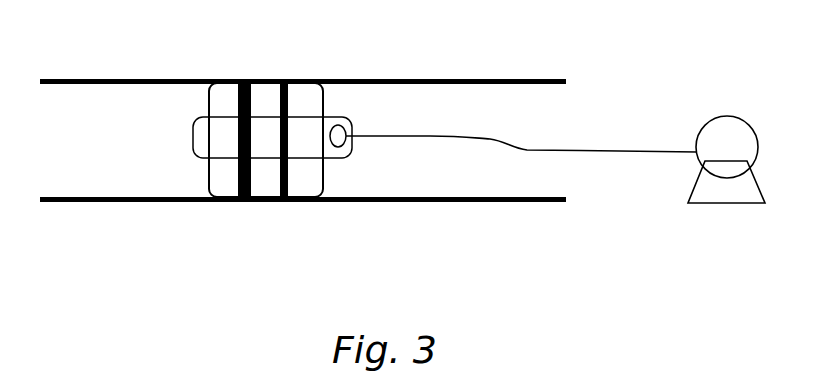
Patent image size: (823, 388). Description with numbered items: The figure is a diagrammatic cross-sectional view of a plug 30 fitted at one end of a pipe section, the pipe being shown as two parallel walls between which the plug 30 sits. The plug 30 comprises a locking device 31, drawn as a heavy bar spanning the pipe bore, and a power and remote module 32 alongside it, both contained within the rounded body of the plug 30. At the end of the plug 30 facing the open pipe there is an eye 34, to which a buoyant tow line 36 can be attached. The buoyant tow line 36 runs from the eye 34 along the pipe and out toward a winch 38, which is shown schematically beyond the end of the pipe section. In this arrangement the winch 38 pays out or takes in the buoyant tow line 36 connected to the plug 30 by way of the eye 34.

The plug 30 is at (223, 177).
The locking device 31 is at (244, 83).
The power and remote module 32 is at (309, 140).
The eye 34 is at (339, 142).
The buoyant tow line 36 is at (602, 153).
The winch 38 is at (710, 203).